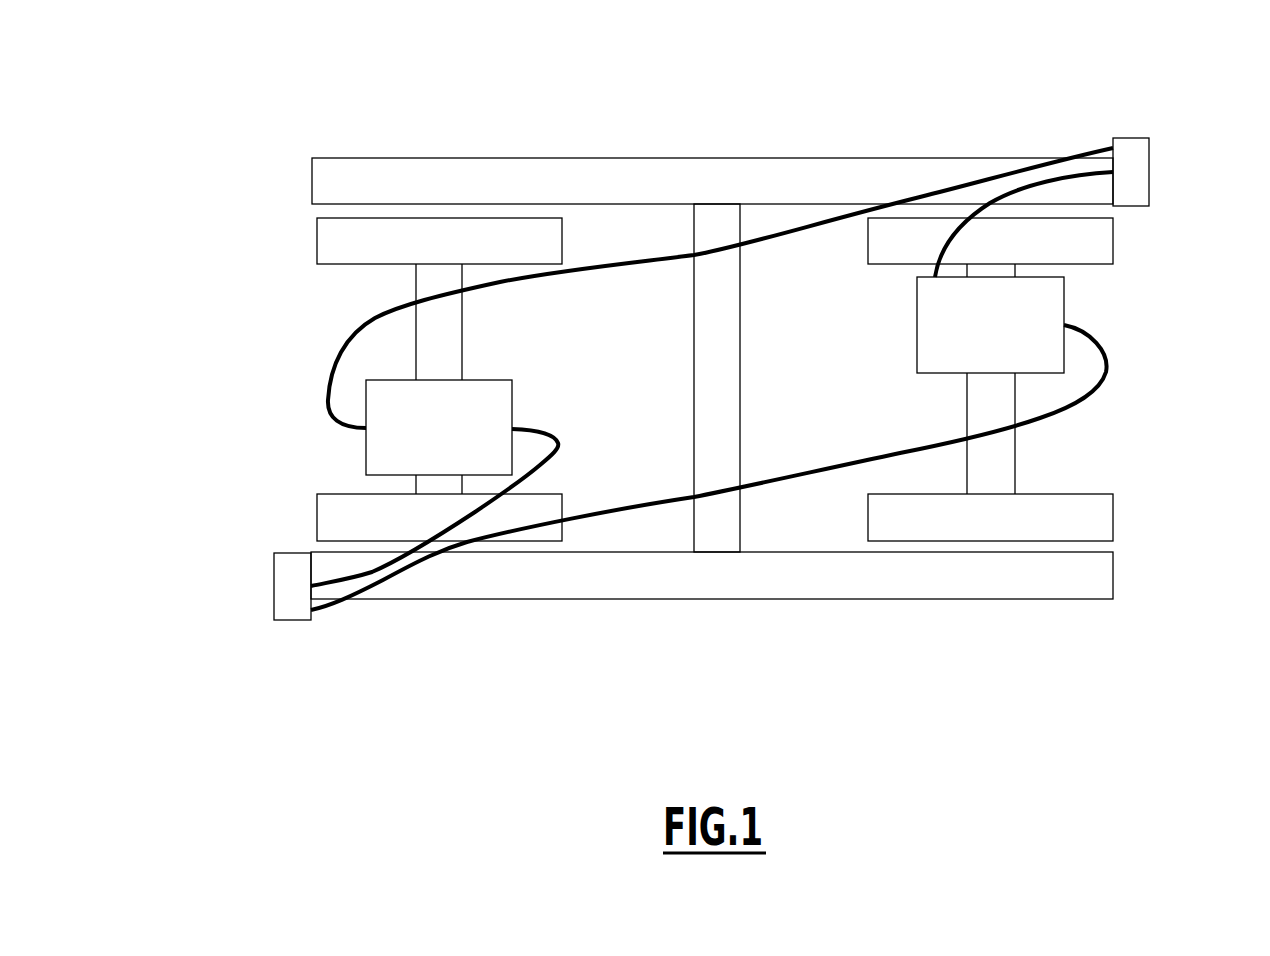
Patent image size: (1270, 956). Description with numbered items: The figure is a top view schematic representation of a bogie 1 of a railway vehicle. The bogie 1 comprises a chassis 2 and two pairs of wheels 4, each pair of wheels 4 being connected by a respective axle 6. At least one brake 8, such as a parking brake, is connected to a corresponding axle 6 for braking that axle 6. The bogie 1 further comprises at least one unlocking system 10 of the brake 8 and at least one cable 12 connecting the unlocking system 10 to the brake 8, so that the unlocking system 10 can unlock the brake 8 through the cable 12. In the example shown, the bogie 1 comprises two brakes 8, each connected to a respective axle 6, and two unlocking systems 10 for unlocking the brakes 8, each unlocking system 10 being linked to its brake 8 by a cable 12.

The bogie 1 is at (1170, 77).
The chassis 2 is at (717, 186).
The wheels 4 is at (326, 242).
The axle 6 is at (437, 287).
The brake 8 is at (715, 376).
The unlocking system 10 is at (292, 586).
The cable 12 is at (1055, 178).